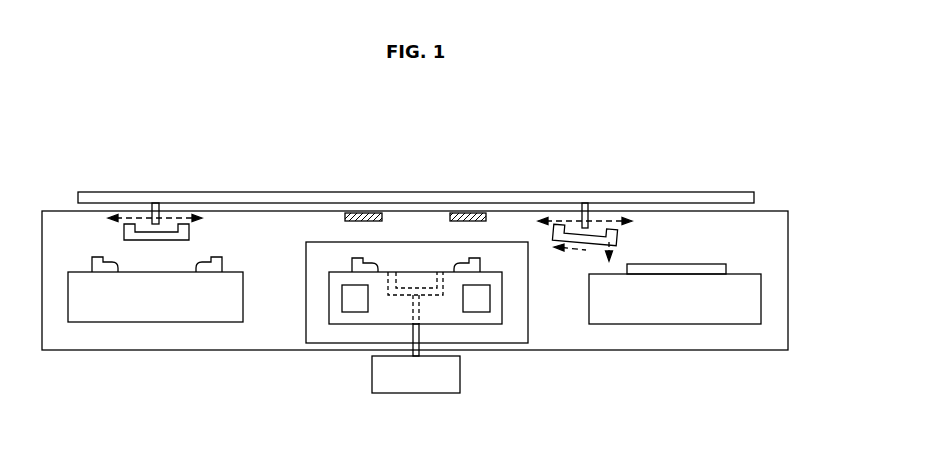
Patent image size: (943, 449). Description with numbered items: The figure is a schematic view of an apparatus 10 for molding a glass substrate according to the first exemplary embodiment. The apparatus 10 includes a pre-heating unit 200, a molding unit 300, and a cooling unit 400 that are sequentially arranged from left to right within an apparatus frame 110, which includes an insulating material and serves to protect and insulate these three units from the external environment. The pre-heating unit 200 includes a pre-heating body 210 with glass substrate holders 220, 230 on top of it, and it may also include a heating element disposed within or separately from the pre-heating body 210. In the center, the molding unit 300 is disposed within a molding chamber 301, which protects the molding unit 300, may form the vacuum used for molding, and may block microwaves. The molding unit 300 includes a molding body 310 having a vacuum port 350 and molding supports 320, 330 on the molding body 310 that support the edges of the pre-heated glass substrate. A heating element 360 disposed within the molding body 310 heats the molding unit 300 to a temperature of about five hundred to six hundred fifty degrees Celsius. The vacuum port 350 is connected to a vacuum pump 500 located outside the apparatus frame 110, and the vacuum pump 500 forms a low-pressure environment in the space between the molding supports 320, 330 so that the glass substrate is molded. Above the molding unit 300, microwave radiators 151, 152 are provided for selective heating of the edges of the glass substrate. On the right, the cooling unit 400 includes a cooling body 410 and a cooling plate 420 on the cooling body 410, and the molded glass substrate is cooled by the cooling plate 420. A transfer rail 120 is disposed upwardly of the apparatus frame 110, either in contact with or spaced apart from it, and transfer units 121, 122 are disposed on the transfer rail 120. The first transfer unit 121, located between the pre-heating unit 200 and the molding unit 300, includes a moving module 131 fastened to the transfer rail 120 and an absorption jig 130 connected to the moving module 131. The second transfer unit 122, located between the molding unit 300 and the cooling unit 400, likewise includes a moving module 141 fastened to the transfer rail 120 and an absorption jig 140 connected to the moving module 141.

The apparatus for molding a glass substrate 10 is at (79, 153).
The apparatus frame 110 is at (770, 211).
The transfer rail 120 is at (209, 198).
The first transfer unit 121 is at (155, 180).
The second transfer unit 122 is at (585, 191).
The absorption jig 130 is at (147, 232).
The moving module 131 is at (162, 217).
The absorption jig 140 is at (597, 232).
The moving module 141 is at (570, 196).
The microwave radiator 151 is at (388, 213).
The microwave radiator 152 is at (444, 213).
The pre-heating unit 200 is at (145, 324).
The pre-heating body 210 is at (157, 300).
The glass substrate holder 220 is at (103, 268).
The glass substrate holder 230 is at (207, 268).
The molding unit 300 is at (406, 296).
The molding chamber 301 is at (305, 308).
The molding body 310 is at (471, 320).
The molding support 320 is at (352, 266).
The molding support 330 is at (481, 266).
The vacuum port 350 is at (415, 310).
The heating element 360 is at (350, 300).
The cooling unit 400 is at (672, 326).
The cooling body 410 is at (679, 302).
The cooling plate 420 is at (703, 270).
The vacuum pump 500 is at (415, 376).